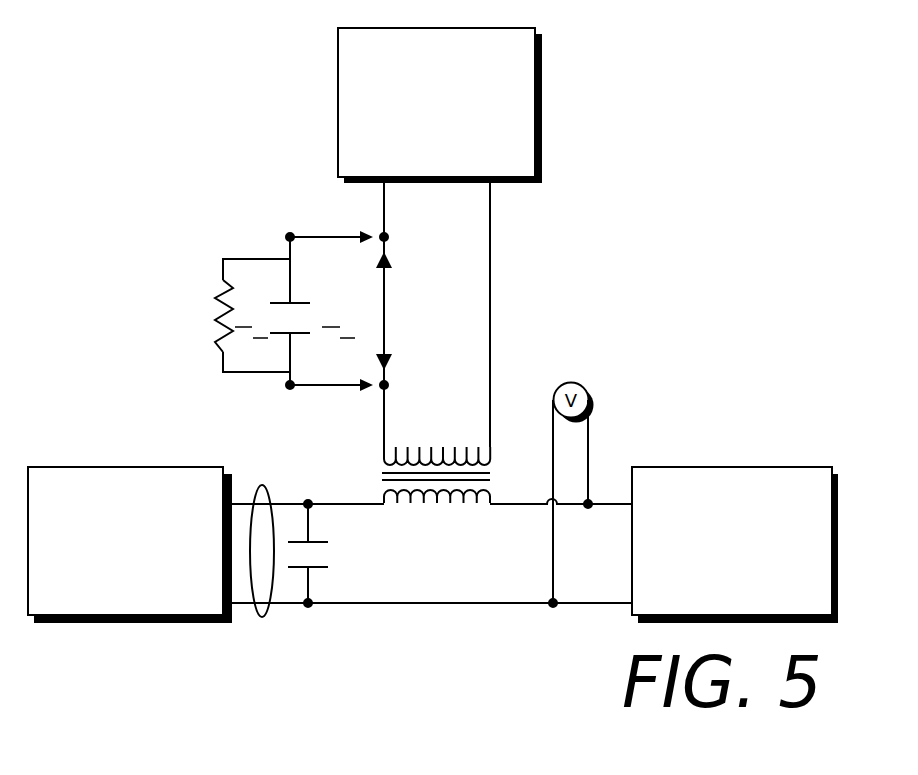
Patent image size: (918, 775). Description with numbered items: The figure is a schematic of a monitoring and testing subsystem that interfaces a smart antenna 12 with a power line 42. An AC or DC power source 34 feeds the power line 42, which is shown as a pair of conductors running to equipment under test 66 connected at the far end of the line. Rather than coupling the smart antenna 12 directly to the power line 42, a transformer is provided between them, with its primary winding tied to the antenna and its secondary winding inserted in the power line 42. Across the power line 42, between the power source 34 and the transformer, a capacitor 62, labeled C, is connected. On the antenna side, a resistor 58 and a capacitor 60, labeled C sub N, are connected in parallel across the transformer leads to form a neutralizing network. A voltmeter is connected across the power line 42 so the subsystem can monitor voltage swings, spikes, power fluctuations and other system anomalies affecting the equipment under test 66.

The smart antenna 12 is at (440, 105).
The power source 34 is at (130, 545).
The power line 42 is at (267, 612).
The resistor 58 is at (232, 290).
The capacitor 60 is at (298, 301).
The capacitor 62 is at (320, 541).
The equipment under test 66 is at (735, 545).